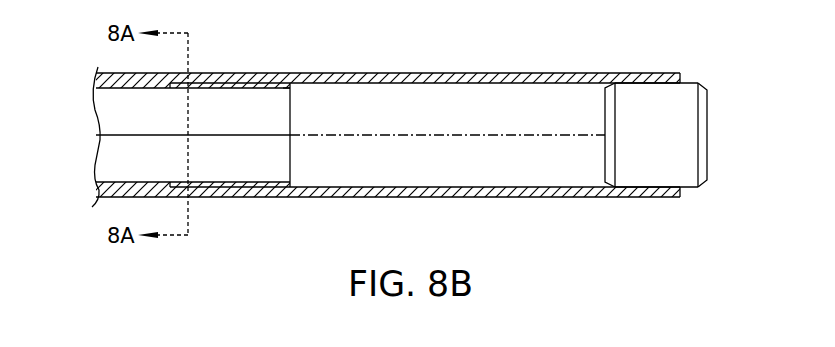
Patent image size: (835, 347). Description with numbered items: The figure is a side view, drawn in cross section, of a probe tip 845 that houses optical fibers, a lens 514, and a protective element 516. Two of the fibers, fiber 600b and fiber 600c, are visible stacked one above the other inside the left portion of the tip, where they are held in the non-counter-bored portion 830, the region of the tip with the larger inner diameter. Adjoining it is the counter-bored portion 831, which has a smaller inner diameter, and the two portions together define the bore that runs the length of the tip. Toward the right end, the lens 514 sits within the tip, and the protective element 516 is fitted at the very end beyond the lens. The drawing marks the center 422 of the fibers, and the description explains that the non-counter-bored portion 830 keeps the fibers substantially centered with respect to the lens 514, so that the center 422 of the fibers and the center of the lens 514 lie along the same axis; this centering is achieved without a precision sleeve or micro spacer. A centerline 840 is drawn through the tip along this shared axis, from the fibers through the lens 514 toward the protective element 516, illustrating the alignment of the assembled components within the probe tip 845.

The non-counter-bored portion 830 is at (120, 88).
The center of fibers 422 is at (130, 138).
The fiber 600b is at (227, 113).
The fiber 600c is at (233, 160).
The counter-bored portion 831 is at (263, 88).
The lumen centerline 840 is at (421, 130).
The lens 514 is at (500, 110).
The protective element 516 is at (682, 97).
The probe tip 845 is at (597, 197).